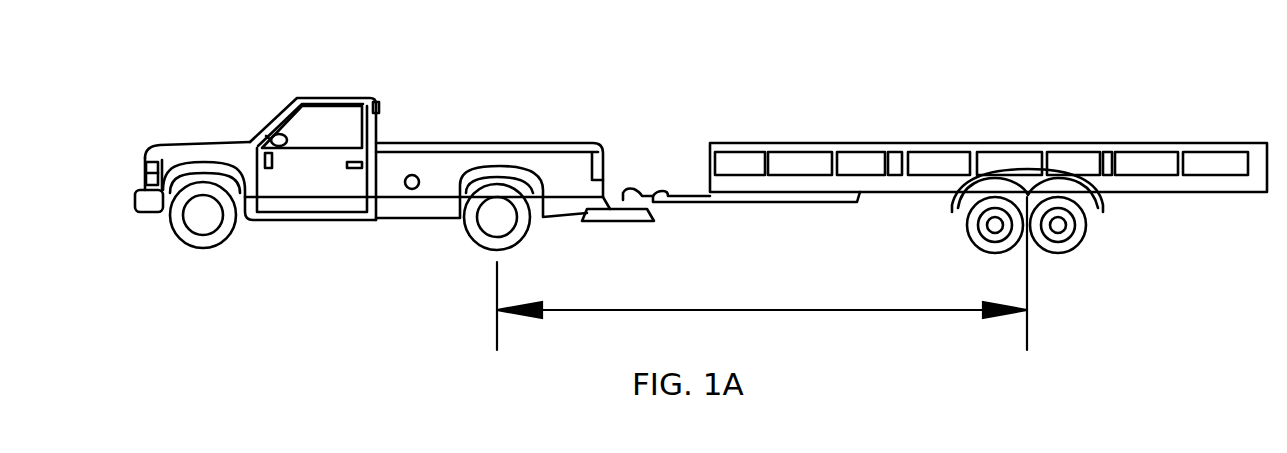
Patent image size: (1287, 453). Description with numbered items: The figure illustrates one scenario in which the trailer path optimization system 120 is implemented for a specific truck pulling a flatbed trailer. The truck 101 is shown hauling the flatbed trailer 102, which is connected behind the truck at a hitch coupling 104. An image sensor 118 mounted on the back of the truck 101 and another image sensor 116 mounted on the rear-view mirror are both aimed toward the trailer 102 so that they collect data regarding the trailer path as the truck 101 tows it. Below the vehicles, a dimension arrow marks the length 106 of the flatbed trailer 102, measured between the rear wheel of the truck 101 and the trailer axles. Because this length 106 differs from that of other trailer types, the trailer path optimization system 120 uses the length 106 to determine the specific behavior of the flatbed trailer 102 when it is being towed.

The truck 101 is at (394, 153).
The flatbed trailer 102 is at (743, 163).
The hitch coupling 104 is at (643, 187).
The length 106 is at (840, 311).
The image sensor 116 is at (257, 129).
The image sensor 118 is at (381, 108).
The trailer path optimization system 120 is at (272, 167).